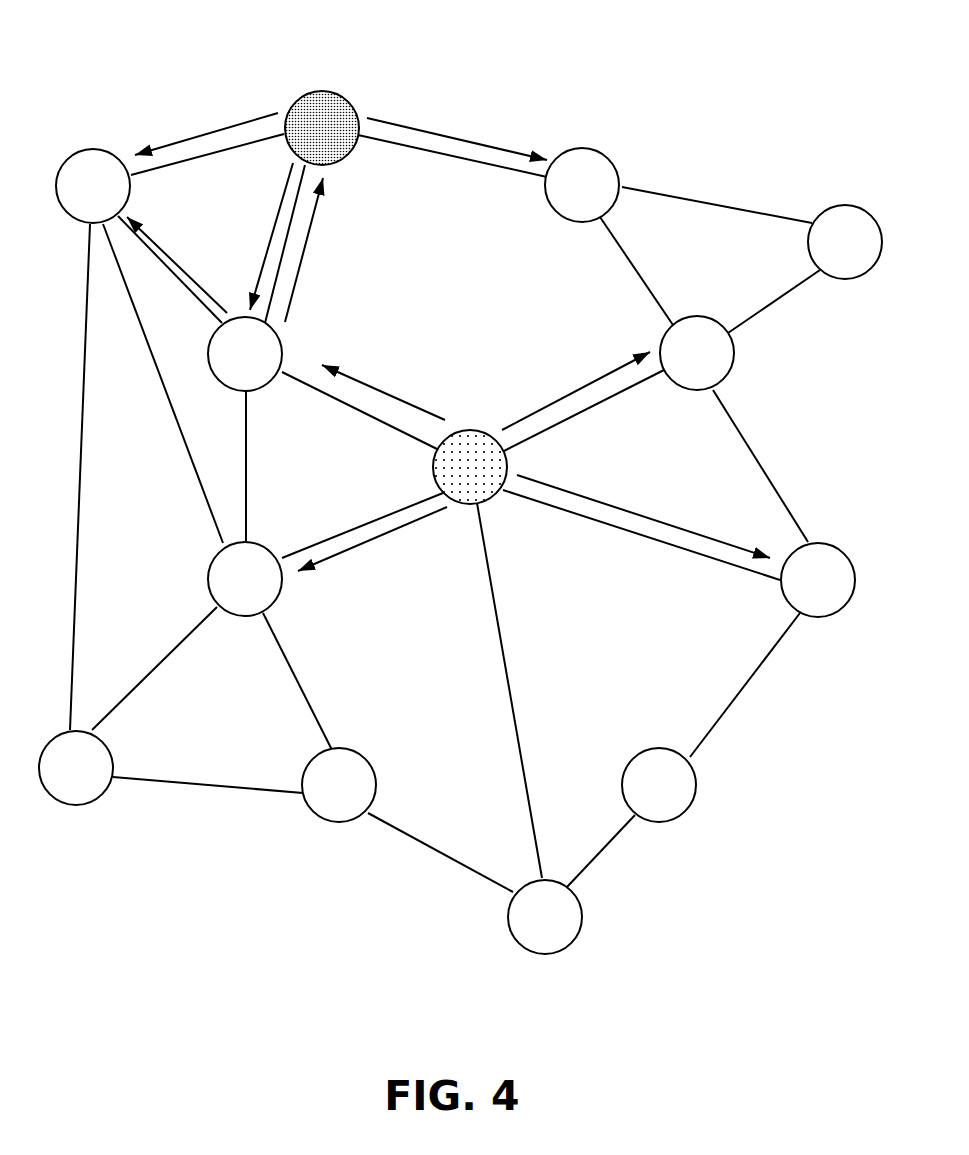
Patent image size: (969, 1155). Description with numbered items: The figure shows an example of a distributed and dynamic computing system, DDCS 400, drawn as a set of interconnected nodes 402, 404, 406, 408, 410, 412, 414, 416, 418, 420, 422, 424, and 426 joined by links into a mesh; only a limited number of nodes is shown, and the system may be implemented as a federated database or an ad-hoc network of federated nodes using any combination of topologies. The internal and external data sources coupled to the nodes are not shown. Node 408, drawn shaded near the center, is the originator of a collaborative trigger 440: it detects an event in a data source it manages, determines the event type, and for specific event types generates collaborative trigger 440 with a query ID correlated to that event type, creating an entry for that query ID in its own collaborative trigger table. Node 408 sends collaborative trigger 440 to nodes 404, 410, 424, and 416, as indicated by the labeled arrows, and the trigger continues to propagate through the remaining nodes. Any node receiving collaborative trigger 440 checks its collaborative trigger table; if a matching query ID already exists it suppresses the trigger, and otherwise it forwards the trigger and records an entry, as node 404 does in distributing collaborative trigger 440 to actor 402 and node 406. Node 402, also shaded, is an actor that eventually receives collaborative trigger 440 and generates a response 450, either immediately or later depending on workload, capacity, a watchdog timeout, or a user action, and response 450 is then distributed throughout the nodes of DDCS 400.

The distributed and dynamic computing system 400 is at (472, 46).
The actor node 402 is at (302, 140).
The node 404 is at (225, 366).
The node 406 is at (73, 198).
The originating node 408 is at (450, 479).
The node 410 is at (677, 365).
The node 412 is at (562, 197).
The node 414 is at (825, 254).
The node 416 is at (798, 592).
The node 418 is at (639, 797).
The node 420 is at (525, 929).
The node 422 is at (319, 797).
The node 424 is at (225, 591).
The node 426 is at (56, 780).
The collaborative trigger 440 is at (152, 213).
The response 450 is at (203, 134).